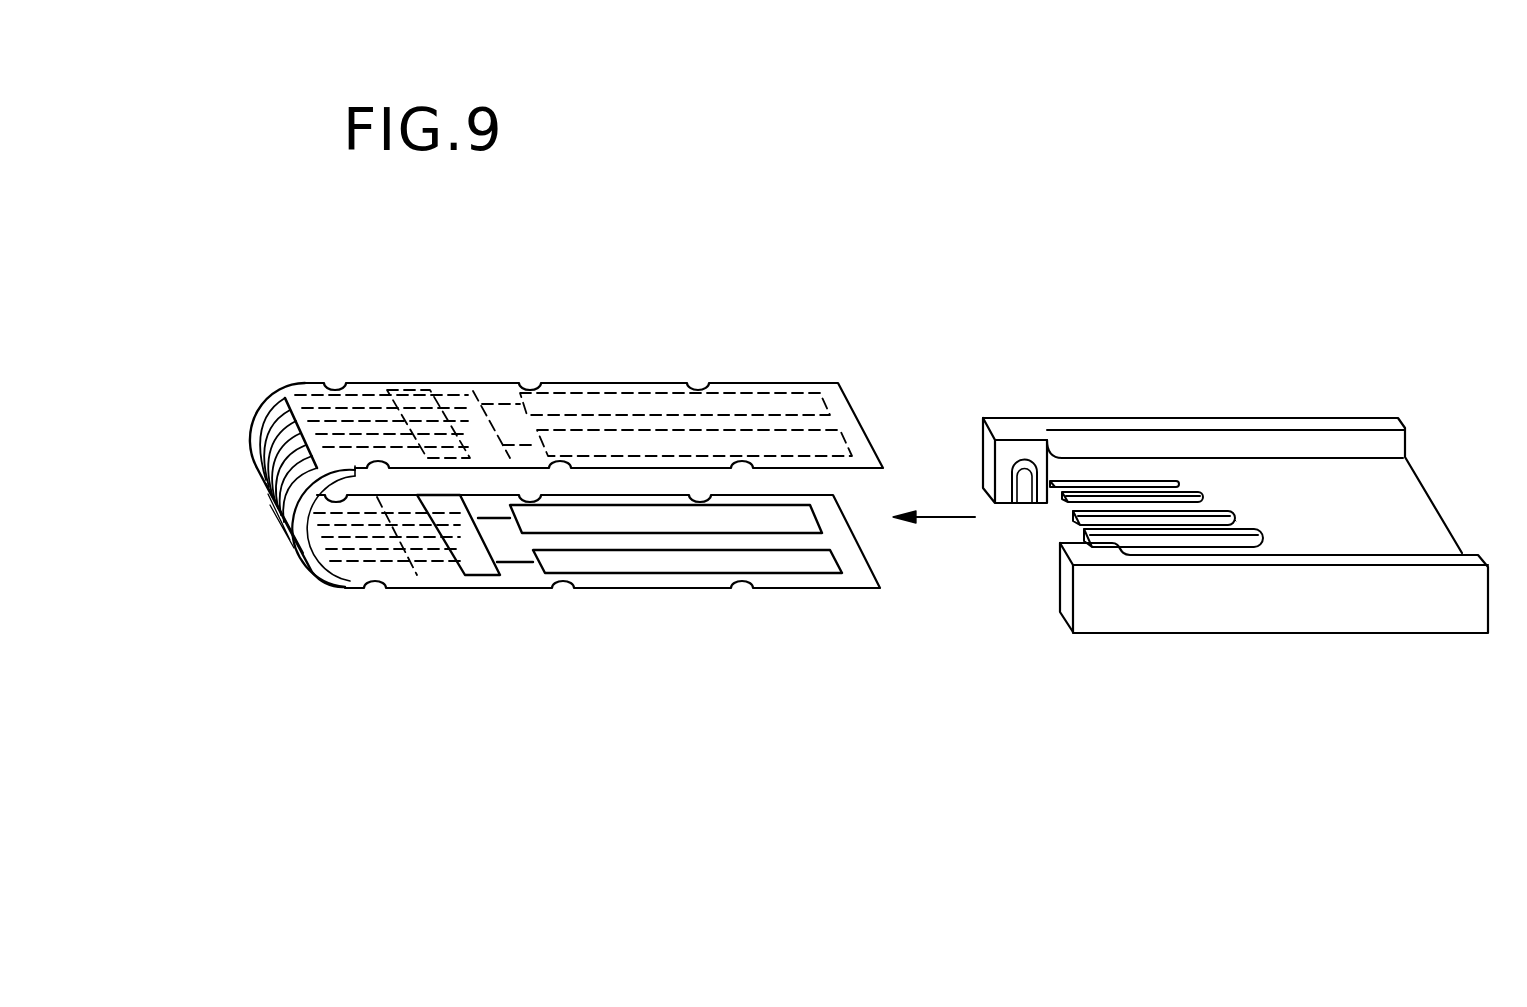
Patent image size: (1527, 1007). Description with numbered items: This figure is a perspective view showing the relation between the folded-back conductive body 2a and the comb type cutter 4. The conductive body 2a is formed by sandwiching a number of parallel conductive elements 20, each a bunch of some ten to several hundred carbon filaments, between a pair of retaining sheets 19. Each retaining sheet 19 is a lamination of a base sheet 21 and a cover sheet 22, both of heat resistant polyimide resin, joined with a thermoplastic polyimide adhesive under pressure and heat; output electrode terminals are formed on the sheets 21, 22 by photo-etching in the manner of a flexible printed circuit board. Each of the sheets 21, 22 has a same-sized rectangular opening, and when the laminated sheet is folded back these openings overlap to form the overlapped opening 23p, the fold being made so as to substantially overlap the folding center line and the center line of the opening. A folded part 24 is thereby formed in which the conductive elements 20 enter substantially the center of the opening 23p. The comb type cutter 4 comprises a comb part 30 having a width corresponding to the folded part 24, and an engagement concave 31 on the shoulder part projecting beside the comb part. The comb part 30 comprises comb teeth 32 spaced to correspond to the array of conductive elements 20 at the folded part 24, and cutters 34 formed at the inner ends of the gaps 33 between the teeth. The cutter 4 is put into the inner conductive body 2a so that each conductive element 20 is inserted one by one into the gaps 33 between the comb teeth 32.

The conductive body 2a is at (678, 367).
The comb type cutter 4 is at (1385, 375).
The retaining sheet 19 is at (528, 688).
The conductive element 20 is at (252, 428).
The base sheet 21 is at (511, 578).
The cover sheet 22 is at (403, 572).
The overlapped opening 23p is at (270, 486).
The folded part 24 is at (256, 475).
The comb part 30 is at (1058, 525).
The engagement concave 31 is at (1020, 503).
The comb teeth 32 is at (1083, 485).
The gap 33 is at (1120, 487).
The cutter 34 is at (1235, 518).